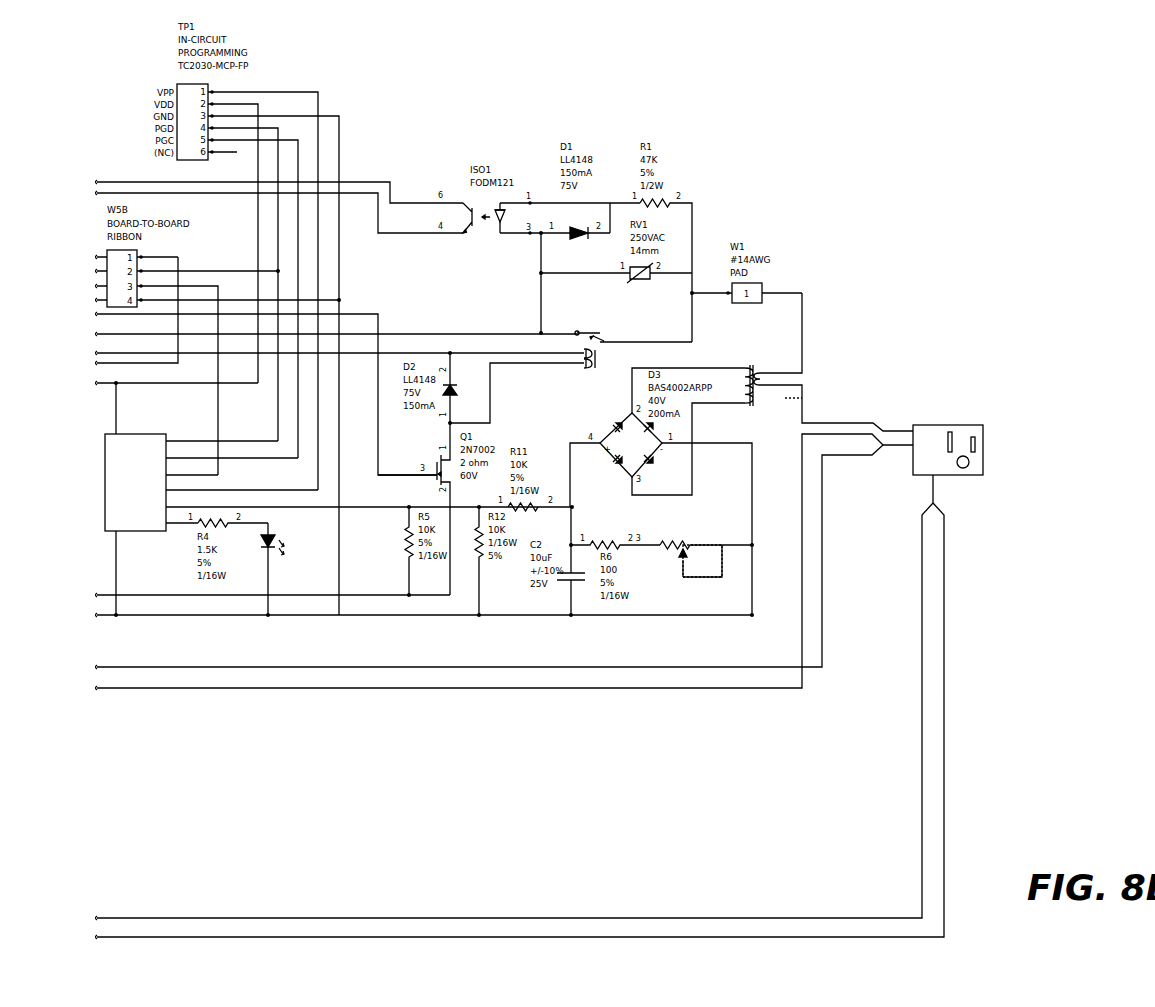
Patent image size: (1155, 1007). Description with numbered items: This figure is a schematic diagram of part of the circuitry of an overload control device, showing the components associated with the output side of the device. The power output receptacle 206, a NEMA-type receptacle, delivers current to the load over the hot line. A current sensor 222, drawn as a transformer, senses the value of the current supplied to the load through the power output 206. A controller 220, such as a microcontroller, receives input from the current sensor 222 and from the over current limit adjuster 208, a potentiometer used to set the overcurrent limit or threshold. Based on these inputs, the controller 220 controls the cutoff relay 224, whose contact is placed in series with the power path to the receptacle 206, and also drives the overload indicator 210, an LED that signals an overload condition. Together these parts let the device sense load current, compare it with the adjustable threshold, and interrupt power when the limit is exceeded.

The power output receptacle 206 is at (983, 425).
The potentiometer 208 is at (703, 585).
The overload indicator 210 is at (280, 580).
The controller 220 is at (95, 483).
The current sensor 222 is at (770, 372).
The cutoff relay 224 is at (556, 345).